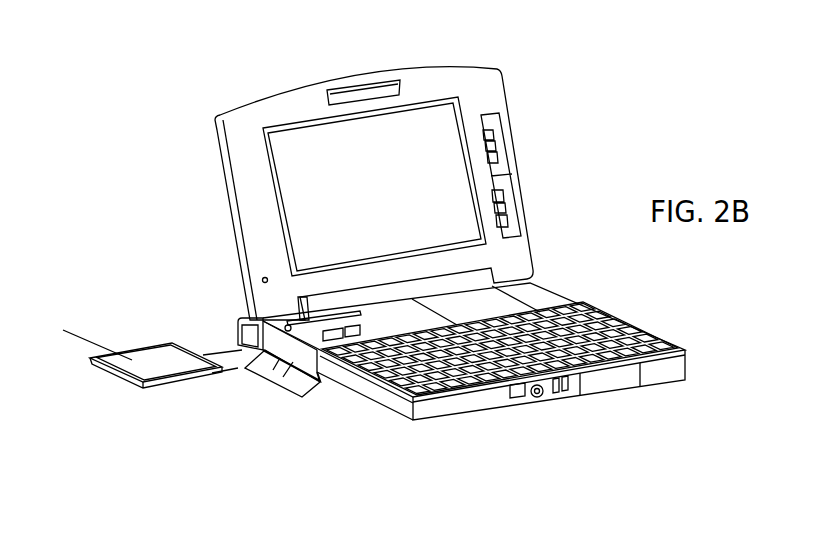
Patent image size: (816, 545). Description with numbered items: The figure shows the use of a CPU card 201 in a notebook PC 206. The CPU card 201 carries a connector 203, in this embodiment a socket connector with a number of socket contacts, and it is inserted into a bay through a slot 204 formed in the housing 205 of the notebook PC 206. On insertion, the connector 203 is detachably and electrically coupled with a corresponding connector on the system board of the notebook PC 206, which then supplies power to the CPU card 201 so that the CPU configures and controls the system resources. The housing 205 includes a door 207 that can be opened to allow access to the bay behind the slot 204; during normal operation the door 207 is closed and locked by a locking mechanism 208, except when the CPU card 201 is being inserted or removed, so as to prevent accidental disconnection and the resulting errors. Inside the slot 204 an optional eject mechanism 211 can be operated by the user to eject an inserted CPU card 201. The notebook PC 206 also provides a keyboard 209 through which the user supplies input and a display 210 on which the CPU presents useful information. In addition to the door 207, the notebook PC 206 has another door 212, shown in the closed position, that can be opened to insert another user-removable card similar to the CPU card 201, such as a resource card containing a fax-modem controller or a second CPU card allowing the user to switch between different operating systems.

The CPU card 201 is at (148, 383).
The connector 203 is at (202, 360).
The slot 204 is at (239, 340).
The housing 205 is at (443, 412).
The notebook PC 206 is at (478, 65).
The door 207 is at (303, 387).
The locking mechanism 208 is at (268, 382).
The keyboard 209 is at (625, 322).
The display 210 is at (373, 203).
The eject mechanism 211 is at (307, 317).
The door 212 is at (370, 398).